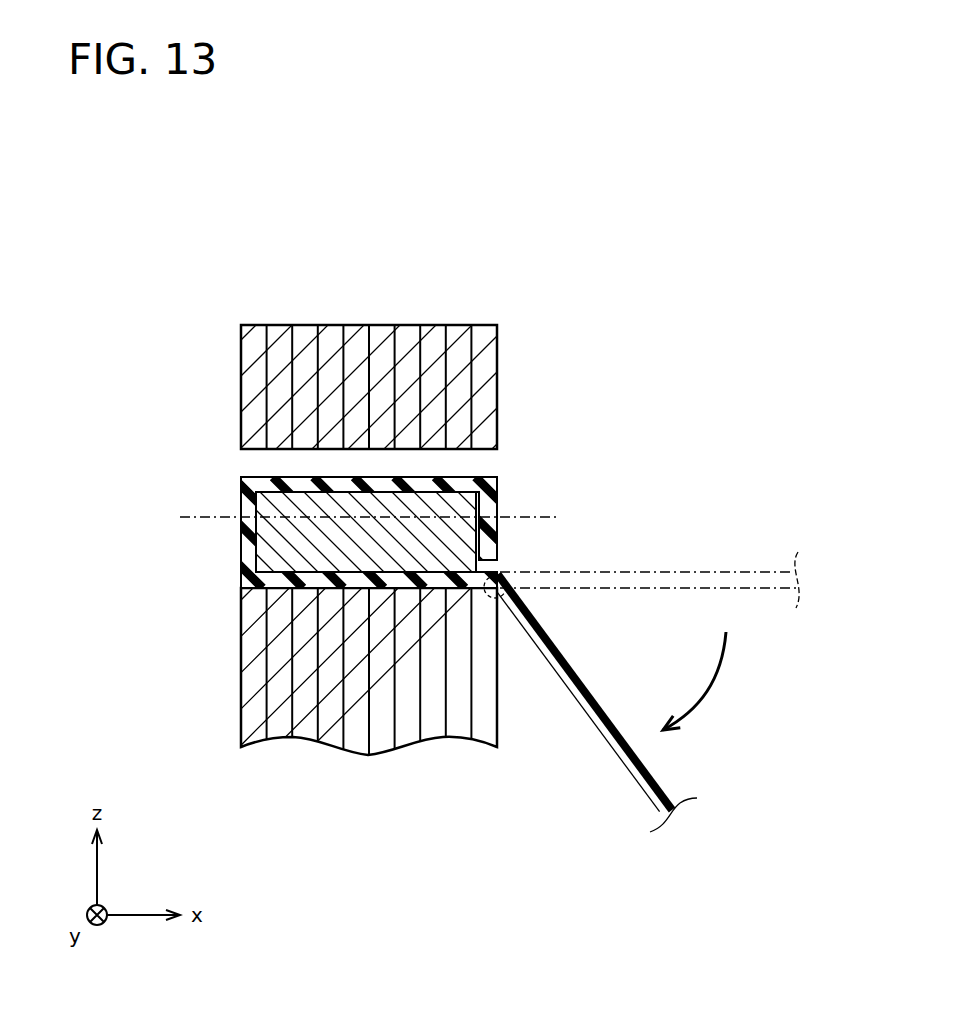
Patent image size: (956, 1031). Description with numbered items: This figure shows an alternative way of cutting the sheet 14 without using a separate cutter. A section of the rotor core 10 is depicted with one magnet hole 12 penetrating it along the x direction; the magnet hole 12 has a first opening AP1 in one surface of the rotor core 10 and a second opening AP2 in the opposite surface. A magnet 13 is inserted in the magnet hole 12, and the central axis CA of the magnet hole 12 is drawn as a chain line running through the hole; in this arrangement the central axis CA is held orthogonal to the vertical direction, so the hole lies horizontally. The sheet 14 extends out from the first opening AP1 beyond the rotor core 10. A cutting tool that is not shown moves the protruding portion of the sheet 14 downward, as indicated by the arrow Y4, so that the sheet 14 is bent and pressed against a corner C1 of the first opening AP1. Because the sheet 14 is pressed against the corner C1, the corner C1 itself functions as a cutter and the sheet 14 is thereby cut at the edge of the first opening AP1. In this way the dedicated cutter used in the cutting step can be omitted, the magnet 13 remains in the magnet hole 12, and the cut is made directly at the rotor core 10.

The rotor core 10 is at (353, 320).
The magnet hole 12 is at (212, 436).
The magnet 13 is at (273, 551).
The sheet 14 is at (600, 712).
The first opening AP1 is at (515, 458).
The second opening AP2 is at (202, 459).
The central axis CA is at (560, 517).
The corner C1 is at (500, 593).
The arrow Y4 is at (708, 687).